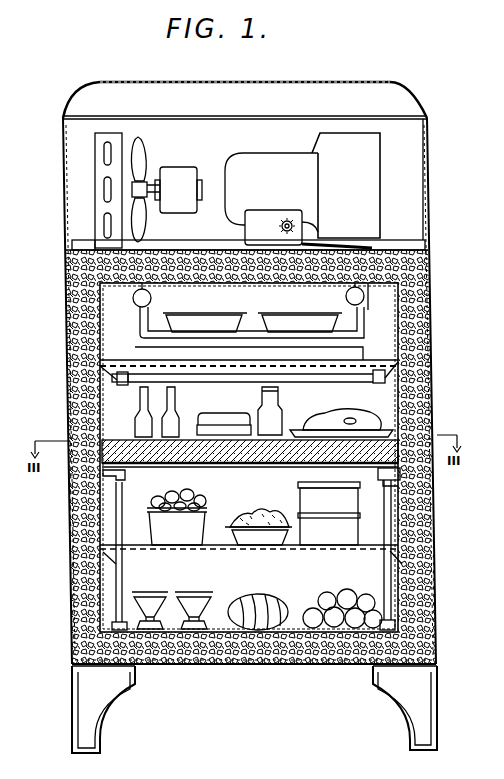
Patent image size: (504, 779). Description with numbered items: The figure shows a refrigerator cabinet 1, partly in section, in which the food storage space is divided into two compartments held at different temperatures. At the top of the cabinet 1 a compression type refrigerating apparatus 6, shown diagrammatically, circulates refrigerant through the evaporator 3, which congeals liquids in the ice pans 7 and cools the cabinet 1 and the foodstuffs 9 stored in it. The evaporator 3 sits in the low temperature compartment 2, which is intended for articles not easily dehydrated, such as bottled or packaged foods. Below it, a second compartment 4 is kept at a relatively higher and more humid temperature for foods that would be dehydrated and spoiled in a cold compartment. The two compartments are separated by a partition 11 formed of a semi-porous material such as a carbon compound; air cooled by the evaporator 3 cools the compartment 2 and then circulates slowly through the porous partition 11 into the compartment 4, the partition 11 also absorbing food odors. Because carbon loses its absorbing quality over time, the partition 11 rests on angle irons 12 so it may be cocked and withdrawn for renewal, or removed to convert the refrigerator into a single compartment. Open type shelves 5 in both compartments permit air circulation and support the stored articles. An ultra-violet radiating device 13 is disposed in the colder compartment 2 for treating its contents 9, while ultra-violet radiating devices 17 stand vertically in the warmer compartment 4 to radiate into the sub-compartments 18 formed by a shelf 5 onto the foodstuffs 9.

The refrigerator cabinet 1 is at (422, 352).
The low temperature compartment 2 is at (383, 318).
The evaporator 3 is at (346, 297).
The second compartment 4 is at (298, 665).
The shelves 5 is at (123, 372).
The refrigerating apparatus 6 is at (213, 151).
The ice pans 7 is at (203, 320).
The foodstuffs 9 is at (314, 413).
The partition 11 is at (177, 464).
The angle irons 12 is at (402, 479).
The ultra-violet radiating device 13 is at (133, 381).
The ultra-violet radiating devices 17 is at (122, 570).
The sub-compartments 18 is at (238, 504).